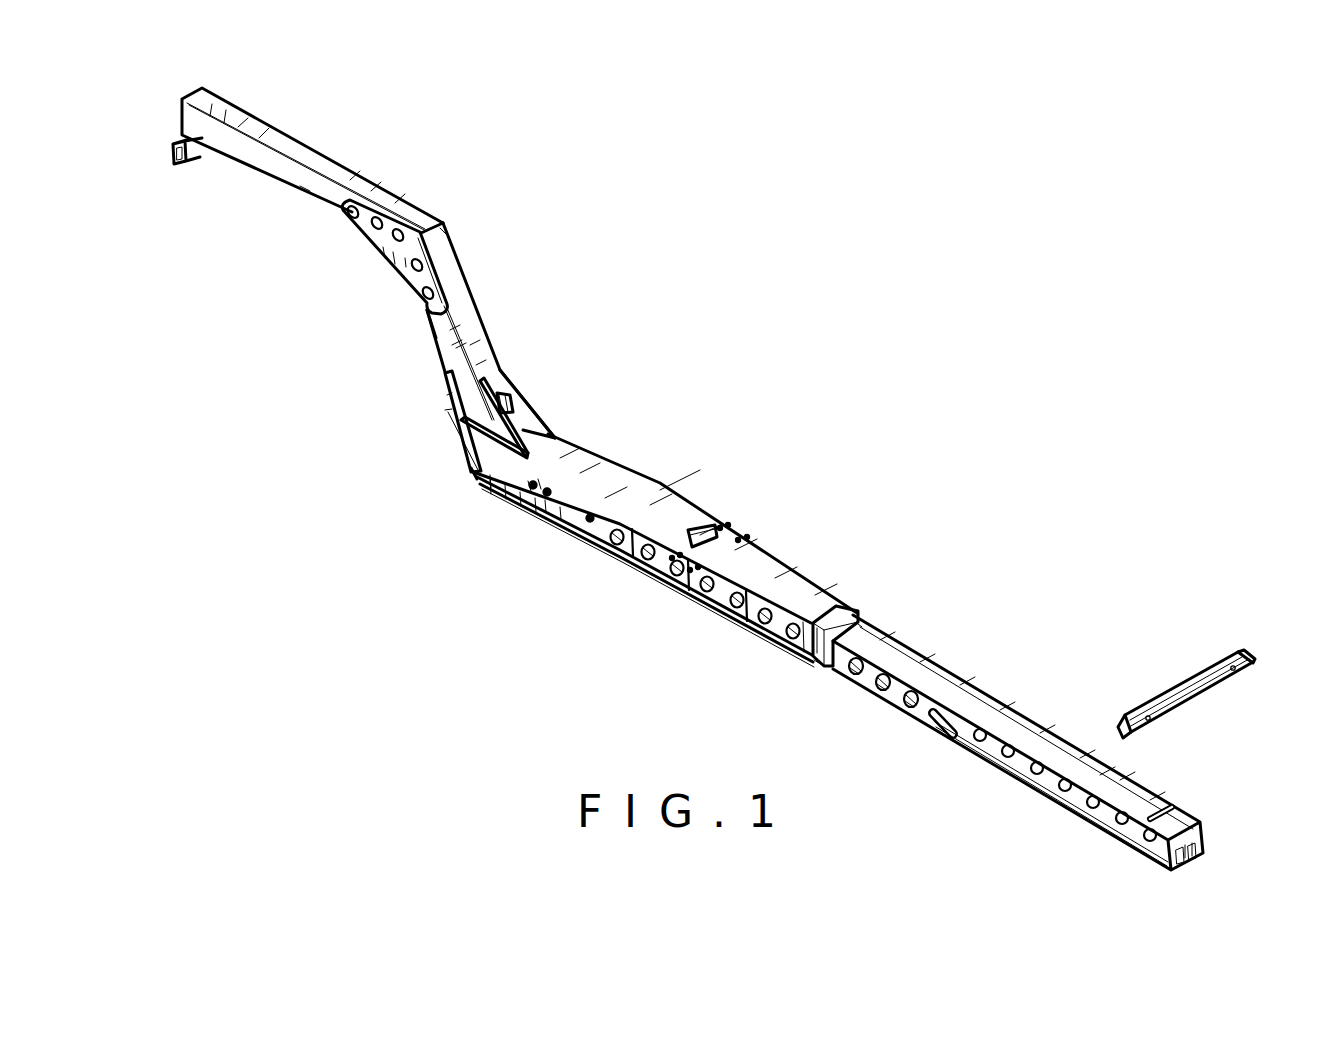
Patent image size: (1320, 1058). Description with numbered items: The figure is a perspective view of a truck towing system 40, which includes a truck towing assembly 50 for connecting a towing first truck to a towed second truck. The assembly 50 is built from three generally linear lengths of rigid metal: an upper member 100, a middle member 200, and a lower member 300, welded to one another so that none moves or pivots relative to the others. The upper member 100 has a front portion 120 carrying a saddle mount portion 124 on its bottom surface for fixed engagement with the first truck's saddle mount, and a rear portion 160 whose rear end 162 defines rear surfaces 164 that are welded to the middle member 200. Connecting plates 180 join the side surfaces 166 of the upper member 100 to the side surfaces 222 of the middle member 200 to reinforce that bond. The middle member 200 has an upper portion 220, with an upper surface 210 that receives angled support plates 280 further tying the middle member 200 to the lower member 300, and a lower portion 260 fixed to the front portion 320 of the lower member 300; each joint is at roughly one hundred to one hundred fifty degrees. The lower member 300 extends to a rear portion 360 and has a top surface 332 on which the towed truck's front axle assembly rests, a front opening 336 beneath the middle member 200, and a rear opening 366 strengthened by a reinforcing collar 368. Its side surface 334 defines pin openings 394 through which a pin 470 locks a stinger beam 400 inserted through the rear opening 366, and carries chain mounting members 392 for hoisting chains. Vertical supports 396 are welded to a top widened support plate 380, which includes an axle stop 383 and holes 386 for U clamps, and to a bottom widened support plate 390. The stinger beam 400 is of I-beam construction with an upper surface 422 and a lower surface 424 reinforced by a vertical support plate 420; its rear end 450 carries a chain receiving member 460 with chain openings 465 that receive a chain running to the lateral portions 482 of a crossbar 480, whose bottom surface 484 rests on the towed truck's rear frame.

The truck towing system 40 is at (762, 292).
The truck towing assembly 50 is at (897, 517).
The upper member 100 is at (379, 134).
The front portion 120 is at (220, 104).
The saddle mount portion 124 is at (177, 166).
The rear portion 160 is at (422, 232).
The rear end 162 is at (443, 223).
The rear surfaces 164 is at (444, 231).
The side surfaces 166 is at (307, 191).
The connecting plates 180 is at (383, 253).
The middle member 200 is at (548, 322).
The upper surface 210 is at (483, 360).
The upper portion 220 is at (452, 275).
The side surfaces 222 is at (430, 317).
The lower portion 260 is at (512, 398).
The angled support plates 280 is at (550, 433).
The lower member 300 is at (727, 467).
The front portion 320 is at (500, 477).
The top surface 332 is at (700, 520).
The side surface 334 is at (637, 547).
The front opening 336 is at (440, 429).
The rear portion 360 is at (814, 606).
The rear opening 366 is at (862, 627).
The reinforcing collar 368 is at (812, 660).
The top widened support plate 380 is at (683, 550).
The axle stop 383 is at (730, 525).
The holes 386 is at (745, 543).
The bottom widened support plate 390 is at (665, 570).
The chain mounting members 392 is at (538, 487).
The pin openings 394 is at (665, 545).
The vertical supports 396 is at (715, 602).
The stinger beam 400 is at (993, 707).
The vertical support plate 420 is at (930, 717).
The upper surface 422 is at (1130, 793).
The lower surface 424 is at (1067, 813).
The rear end 450 is at (1175, 816).
The chain receiving member 460 is at (1205, 830).
The chain openings 465 is at (1197, 863).
The pin 470 is at (588, 523).
The crossbar 480 is at (1200, 662).
The lateral portions 482 is at (1243, 657).
The bottom surface 484 is at (1188, 707).